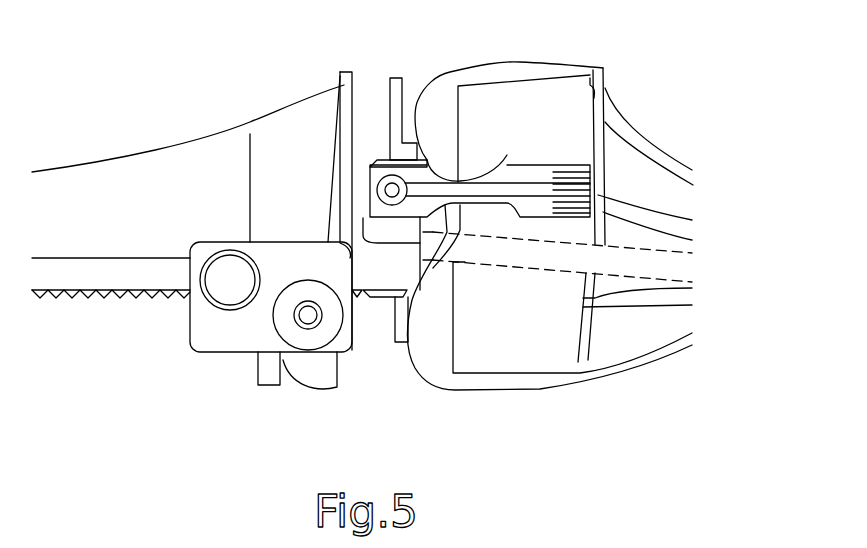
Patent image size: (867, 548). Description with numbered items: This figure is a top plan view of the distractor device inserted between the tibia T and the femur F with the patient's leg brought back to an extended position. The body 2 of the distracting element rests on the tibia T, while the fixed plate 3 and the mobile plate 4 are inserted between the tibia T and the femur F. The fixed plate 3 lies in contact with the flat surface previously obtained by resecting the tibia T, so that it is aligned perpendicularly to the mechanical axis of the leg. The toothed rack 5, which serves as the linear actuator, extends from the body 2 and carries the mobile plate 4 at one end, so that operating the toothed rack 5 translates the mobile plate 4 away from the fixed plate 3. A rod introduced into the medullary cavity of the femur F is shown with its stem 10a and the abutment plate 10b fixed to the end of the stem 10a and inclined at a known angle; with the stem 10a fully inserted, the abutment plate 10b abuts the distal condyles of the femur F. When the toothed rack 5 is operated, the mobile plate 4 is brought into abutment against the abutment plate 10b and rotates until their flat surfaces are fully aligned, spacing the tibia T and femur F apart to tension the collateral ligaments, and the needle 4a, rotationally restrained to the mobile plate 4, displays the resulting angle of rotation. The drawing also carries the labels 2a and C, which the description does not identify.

The body 2 is at (233, 332).
The frame mounting portion 2a is at (597, 70).
The fixed plate 3 is at (341, 72).
The mobile plate 4 is at (400, 88).
The needle 4a is at (480, 193).
The toothed rack 5 is at (137, 272).
The stem 10a is at (665, 272).
The abutment plate 10b is at (393, 347).
The cover C is at (440, 103).
The femur F is at (637, 168).
The tibia T is at (292, 153).